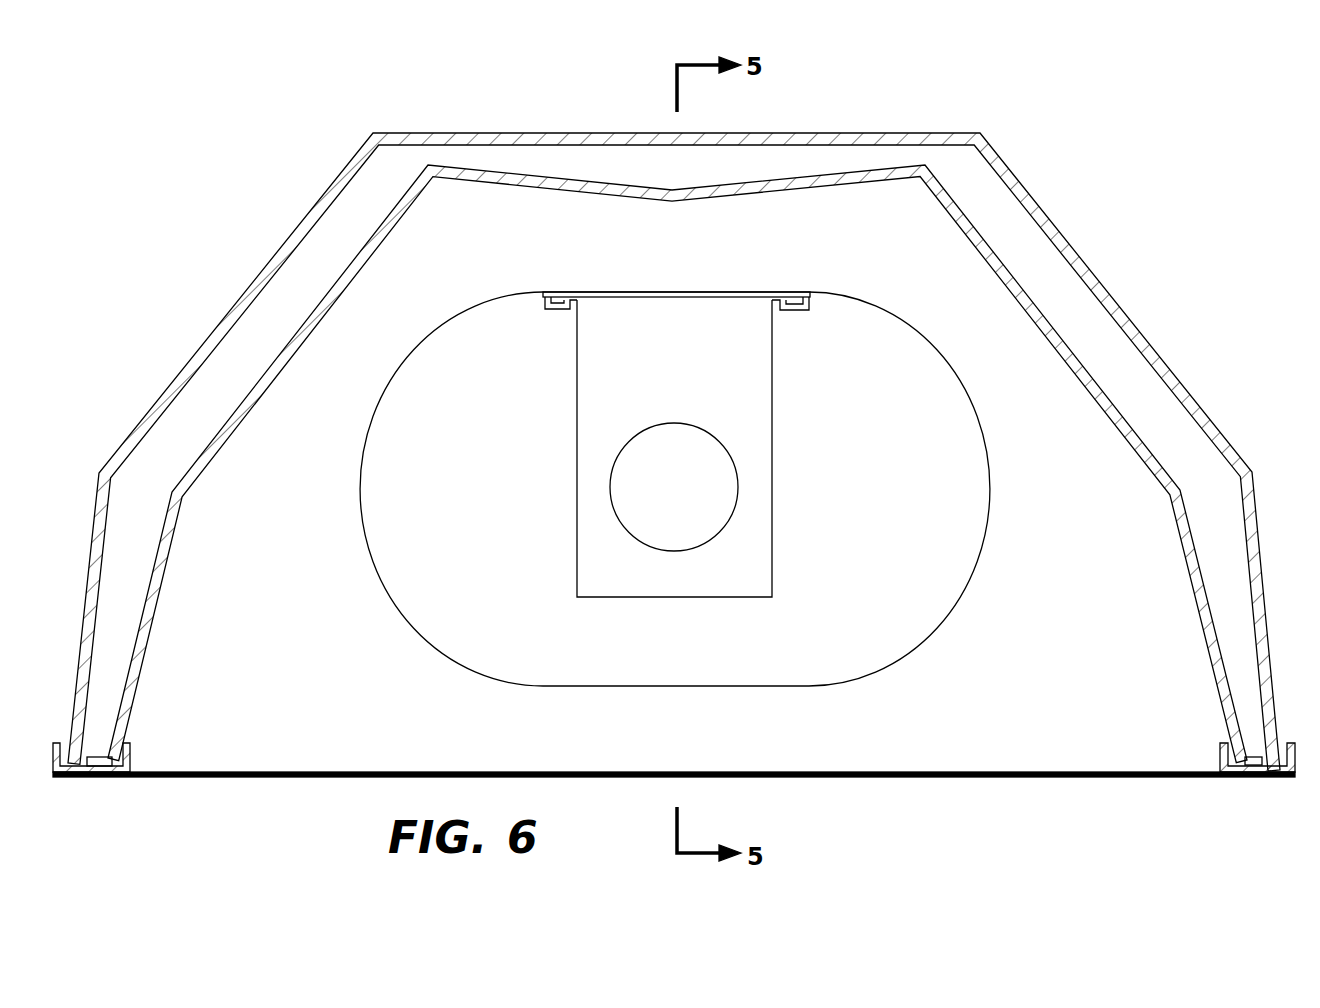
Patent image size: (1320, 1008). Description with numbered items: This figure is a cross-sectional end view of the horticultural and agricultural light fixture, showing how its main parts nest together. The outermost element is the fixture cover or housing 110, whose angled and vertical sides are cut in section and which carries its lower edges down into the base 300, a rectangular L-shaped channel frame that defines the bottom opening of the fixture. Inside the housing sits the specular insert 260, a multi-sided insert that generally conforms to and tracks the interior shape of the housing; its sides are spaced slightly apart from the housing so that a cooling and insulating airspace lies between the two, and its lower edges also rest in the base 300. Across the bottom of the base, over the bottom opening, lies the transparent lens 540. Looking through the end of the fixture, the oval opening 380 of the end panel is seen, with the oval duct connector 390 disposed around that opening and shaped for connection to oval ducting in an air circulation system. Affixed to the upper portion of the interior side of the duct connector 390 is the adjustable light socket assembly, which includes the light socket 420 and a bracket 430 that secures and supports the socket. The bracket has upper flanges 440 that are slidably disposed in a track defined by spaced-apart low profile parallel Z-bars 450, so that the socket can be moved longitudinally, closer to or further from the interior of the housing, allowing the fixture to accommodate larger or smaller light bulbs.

The fixture cover or housing 110 is at (292, 236).
The specular insert 260 is at (285, 346).
The base 300 is at (83, 779).
The oval opening 380 is at (375, 468).
The oval duct connector 390 is at (987, 528).
The light socket 420 is at (738, 486).
The bracket 430 is at (762, 382).
The upper flanges 440 is at (783, 296).
The Z-bars 450 is at (817, 297).
The transparent lens 540 is at (232, 779).